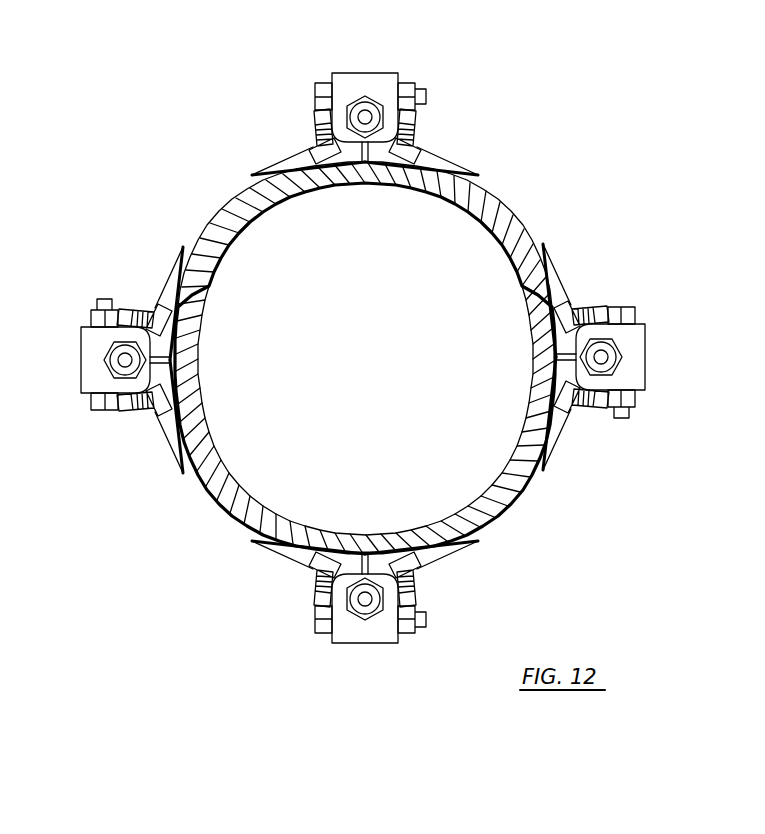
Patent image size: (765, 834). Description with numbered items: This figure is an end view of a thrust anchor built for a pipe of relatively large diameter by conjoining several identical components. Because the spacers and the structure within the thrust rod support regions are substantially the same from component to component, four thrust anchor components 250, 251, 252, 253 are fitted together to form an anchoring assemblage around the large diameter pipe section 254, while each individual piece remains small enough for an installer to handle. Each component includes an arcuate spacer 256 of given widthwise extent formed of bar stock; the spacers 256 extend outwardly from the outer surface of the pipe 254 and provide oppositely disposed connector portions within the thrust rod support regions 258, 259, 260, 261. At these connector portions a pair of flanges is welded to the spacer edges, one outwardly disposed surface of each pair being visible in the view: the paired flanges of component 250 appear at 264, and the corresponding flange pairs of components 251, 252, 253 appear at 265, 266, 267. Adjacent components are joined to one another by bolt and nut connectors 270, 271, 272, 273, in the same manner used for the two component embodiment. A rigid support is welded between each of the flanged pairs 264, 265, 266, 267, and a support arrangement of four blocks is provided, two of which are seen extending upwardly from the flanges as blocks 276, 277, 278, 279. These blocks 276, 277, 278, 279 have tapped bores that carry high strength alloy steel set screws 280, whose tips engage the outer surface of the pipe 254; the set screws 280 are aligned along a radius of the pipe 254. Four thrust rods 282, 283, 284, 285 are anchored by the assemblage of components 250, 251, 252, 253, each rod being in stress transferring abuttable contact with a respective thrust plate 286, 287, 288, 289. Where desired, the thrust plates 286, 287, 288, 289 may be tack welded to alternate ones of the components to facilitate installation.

The thrust anchor component 250 is at (222, 188).
The thrust anchor component 251 is at (656, 176).
The thrust anchor component 252 is at (542, 548).
The thrust anchor component 253 is at (214, 535).
The large diameter pipe section 254 is at (252, 224).
The arcuate spacer 256 is at (214, 221).
The thrust rod support region 258 is at (373, 50).
The thrust rod support region 259 is at (658, 362).
The thrust rod support region 260 is at (357, 668).
The thrust rod support region 261 is at (70, 361).
The paired flanges 264 is at (282, 168).
The flange pair 265 is at (448, 168).
The flange pair 266 is at (450, 548).
The flange pair 267 is at (283, 551).
The bolt and nut connector 270 is at (428, 92).
The bolt and nut connector 271 is at (630, 416).
The bolt and nut connector 272 is at (426, 627).
The bolt and nut connector 273 is at (97, 302).
The block 276 is at (312, 152).
The block 277 is at (416, 150).
The block 278 is at (578, 412).
The block 279 is at (318, 578).
The set screw 280 is at (316, 98).
The thrust rod 282 is at (371, 110).
The thrust rod 283 is at (617, 352).
The thrust rod 284 is at (371, 608).
The thrust rod 285 is at (110, 366).
The thrust plate 286 is at (357, 85).
The thrust plate 287 is at (627, 379).
The thrust plate 288 is at (350, 632).
The thrust plate 289 is at (93, 348).